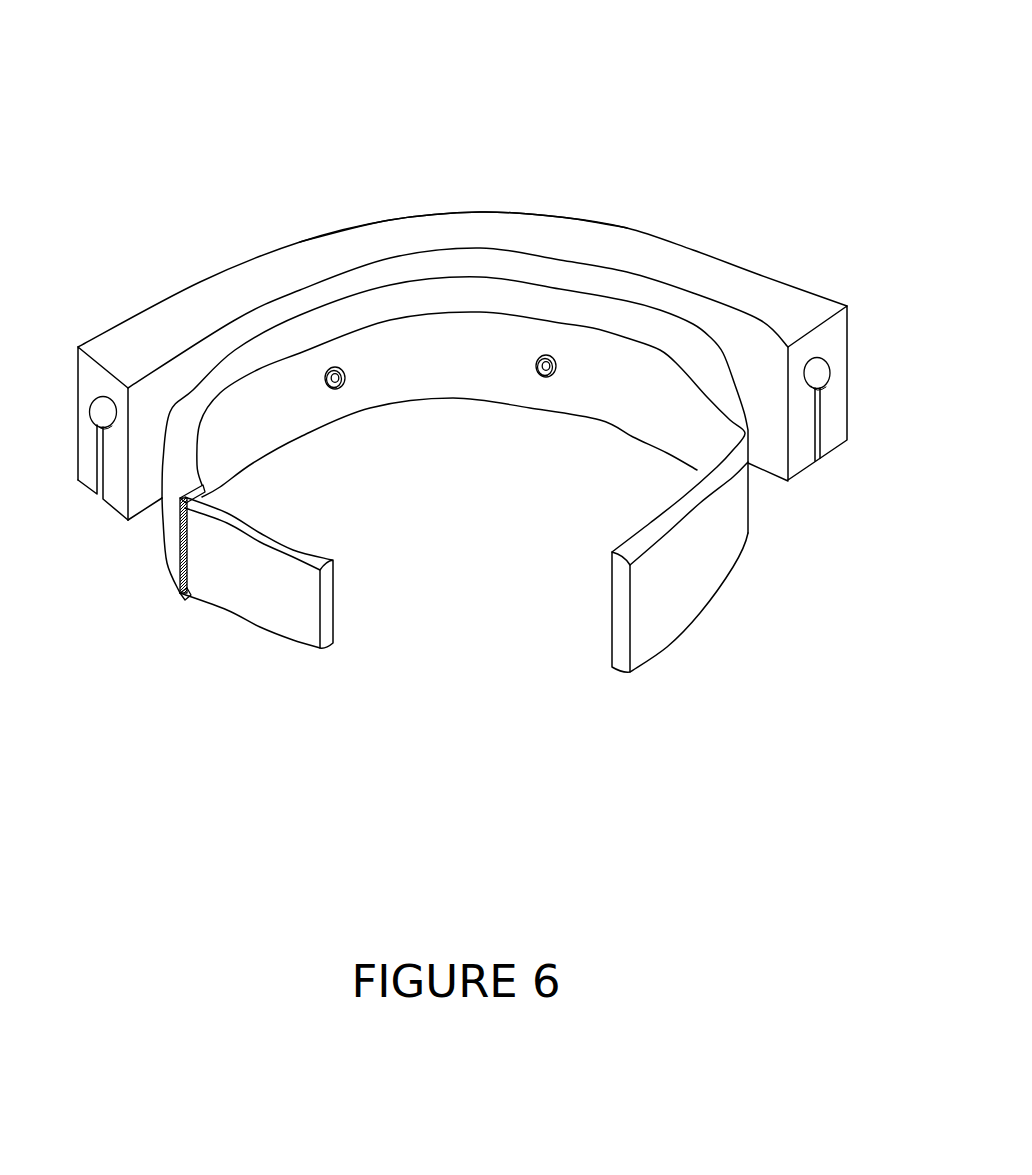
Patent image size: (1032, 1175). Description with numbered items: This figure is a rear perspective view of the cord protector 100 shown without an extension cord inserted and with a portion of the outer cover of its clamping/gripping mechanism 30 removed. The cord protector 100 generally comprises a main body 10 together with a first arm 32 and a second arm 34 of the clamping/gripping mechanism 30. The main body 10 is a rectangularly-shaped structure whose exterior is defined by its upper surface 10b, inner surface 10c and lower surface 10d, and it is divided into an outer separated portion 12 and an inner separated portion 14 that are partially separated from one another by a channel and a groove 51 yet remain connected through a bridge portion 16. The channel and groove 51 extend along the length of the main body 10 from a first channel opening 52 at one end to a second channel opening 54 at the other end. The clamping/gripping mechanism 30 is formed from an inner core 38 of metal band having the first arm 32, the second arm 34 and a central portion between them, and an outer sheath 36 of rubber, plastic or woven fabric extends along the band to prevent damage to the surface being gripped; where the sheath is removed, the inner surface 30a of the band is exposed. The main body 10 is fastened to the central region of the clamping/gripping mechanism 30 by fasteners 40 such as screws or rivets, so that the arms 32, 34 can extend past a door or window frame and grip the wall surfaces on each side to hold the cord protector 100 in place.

The cord protector 100 is at (549, 85).
The main body 10 is at (392, 187).
The upper surface 10b is at (287, 280).
The inner surface 10c is at (233, 333).
The lower surface 10d is at (768, 486).
The outer separated portion 12 is at (90, 477).
The inner separated portion 14 is at (115, 500).
The bridge portion 16 is at (112, 383).
The clamping/gripping mechanism 30 is at (456, 367).
The inner surface of band 30a is at (533, 332).
The first arm 32 is at (292, 682).
The second arm 34 is at (612, 652).
The outer sheath 36 is at (192, 462).
The inner core 38 is at (325, 583).
The fasteners 40 is at (544, 379).
The groove 51 is at (820, 450).
The first channel opening 52 is at (97, 410).
The second channel opening 54 is at (820, 373).